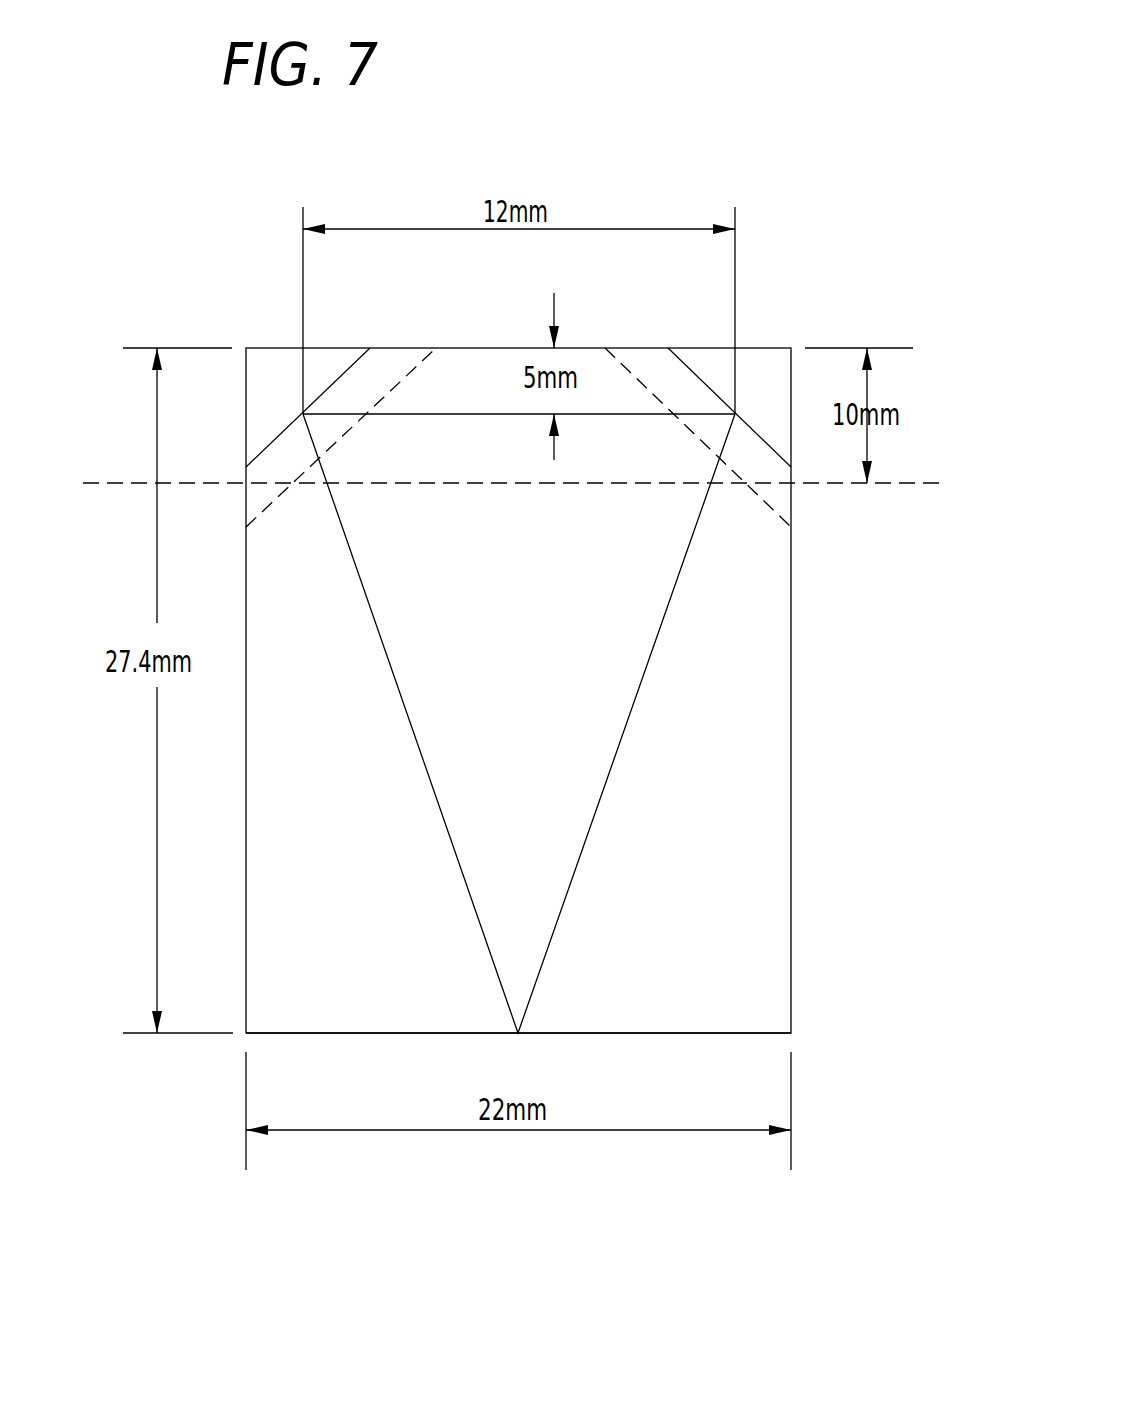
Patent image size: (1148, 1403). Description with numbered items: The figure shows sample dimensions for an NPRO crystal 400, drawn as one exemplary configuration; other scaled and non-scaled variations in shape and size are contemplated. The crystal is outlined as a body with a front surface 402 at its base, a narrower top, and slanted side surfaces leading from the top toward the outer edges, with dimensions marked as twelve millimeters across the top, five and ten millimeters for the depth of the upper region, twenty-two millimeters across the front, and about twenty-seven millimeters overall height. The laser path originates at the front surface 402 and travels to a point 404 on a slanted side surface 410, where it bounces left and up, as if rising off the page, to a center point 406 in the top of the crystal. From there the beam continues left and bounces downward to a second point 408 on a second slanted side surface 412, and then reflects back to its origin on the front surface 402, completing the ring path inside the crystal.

The NPRO crystal 400 is at (183, 203).
The front surface 402 is at (613, 1072).
The point on slanted side surface 404 is at (735, 414).
The center point 406 is at (498, 414).
The second point 408 is at (303, 414).
The slanted side surface 410 is at (660, 400).
The second slanted side surface 412 is at (392, 388).